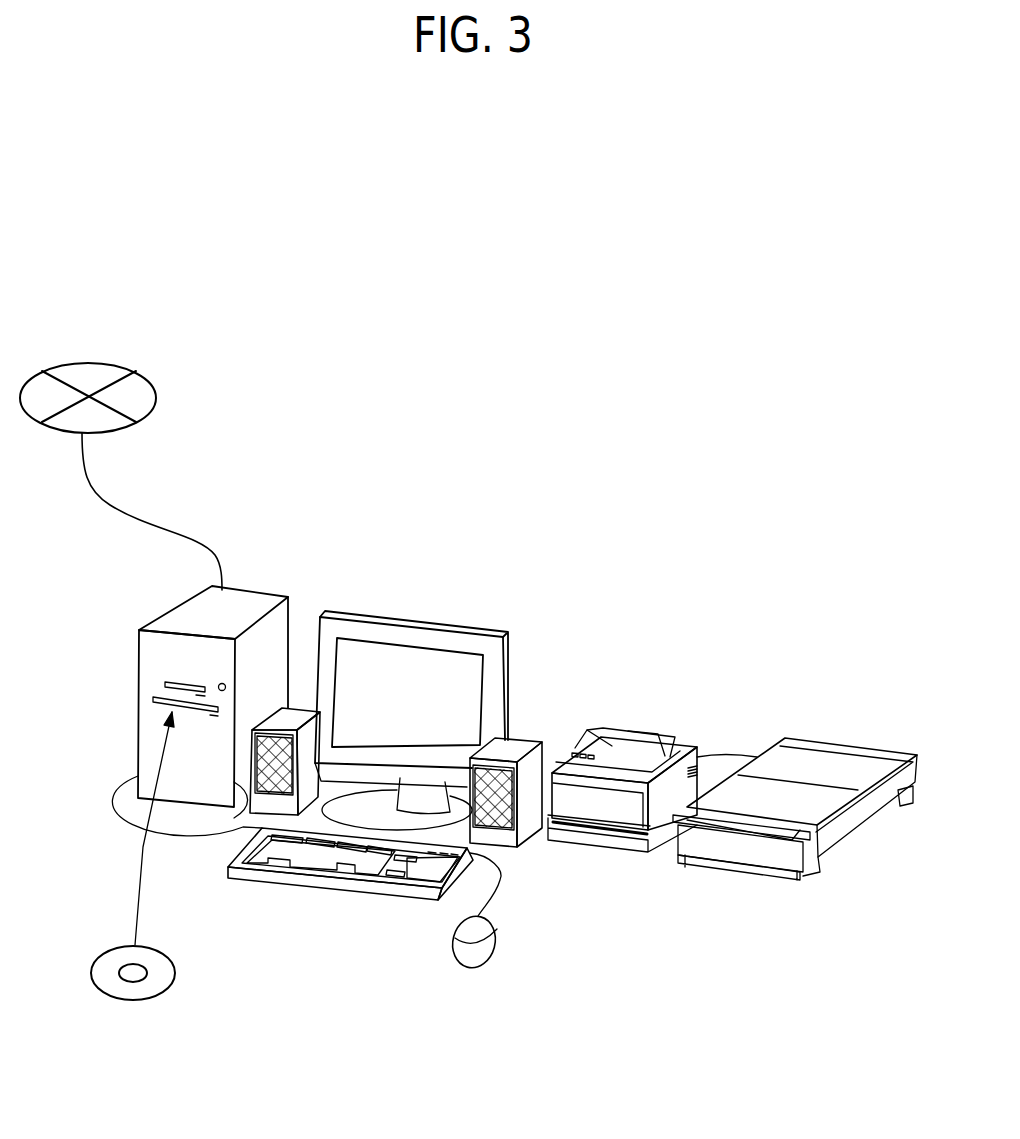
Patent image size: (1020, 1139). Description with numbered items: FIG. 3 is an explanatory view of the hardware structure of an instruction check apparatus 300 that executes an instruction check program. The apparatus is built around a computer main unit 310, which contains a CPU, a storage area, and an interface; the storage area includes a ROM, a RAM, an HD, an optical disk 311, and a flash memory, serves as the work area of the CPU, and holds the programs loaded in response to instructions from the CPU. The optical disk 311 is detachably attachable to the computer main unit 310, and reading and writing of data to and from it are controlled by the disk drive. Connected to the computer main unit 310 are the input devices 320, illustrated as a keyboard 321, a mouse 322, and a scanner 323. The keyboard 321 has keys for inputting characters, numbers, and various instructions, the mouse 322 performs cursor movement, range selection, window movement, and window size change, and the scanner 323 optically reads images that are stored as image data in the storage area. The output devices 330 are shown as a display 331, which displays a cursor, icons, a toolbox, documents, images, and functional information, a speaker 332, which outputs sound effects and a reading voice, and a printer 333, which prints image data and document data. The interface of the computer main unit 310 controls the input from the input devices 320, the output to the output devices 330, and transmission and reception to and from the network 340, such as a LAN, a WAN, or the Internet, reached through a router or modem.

The image processing system 300 is at (690, 442).
The computer main unit 310 is at (248, 590).
The optical disk 311 is at (160, 952).
The input devices 320 is at (612, 1022).
The keyboard 321 is at (380, 900).
The mouse 322 is at (473, 966).
The scanner 323 is at (707, 867).
The output devices 330 is at (685, 572).
The display 331 is at (477, 624).
The speaker 332 is at (537, 740).
The printer 333 is at (650, 728).
The network 340 is at (103, 364).